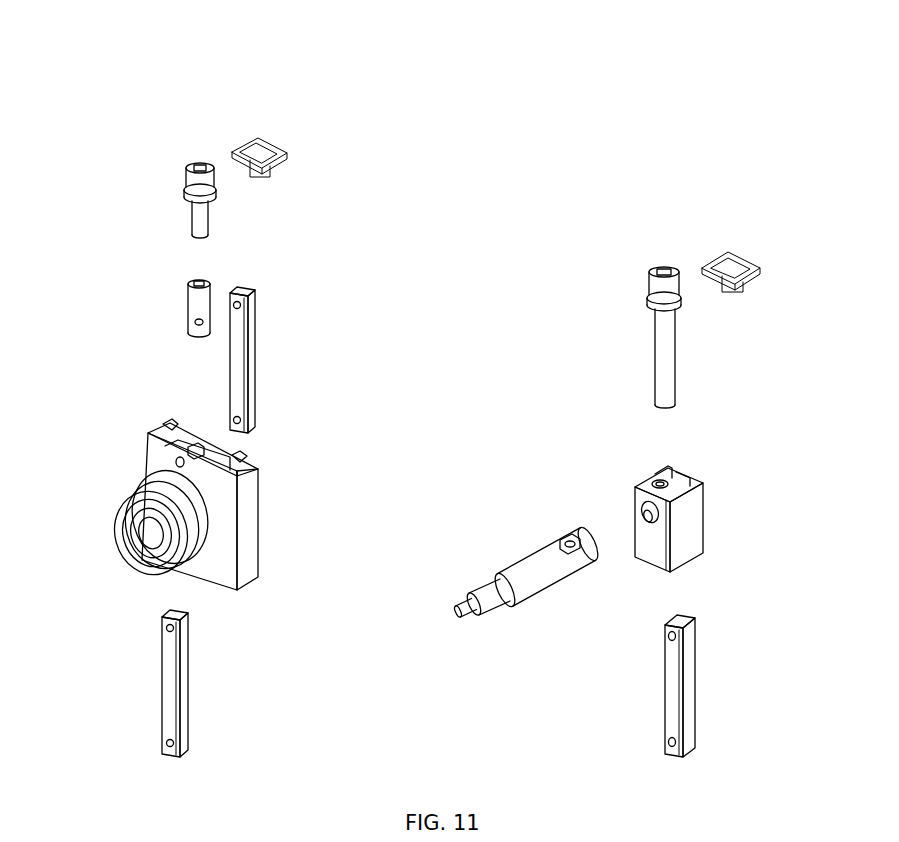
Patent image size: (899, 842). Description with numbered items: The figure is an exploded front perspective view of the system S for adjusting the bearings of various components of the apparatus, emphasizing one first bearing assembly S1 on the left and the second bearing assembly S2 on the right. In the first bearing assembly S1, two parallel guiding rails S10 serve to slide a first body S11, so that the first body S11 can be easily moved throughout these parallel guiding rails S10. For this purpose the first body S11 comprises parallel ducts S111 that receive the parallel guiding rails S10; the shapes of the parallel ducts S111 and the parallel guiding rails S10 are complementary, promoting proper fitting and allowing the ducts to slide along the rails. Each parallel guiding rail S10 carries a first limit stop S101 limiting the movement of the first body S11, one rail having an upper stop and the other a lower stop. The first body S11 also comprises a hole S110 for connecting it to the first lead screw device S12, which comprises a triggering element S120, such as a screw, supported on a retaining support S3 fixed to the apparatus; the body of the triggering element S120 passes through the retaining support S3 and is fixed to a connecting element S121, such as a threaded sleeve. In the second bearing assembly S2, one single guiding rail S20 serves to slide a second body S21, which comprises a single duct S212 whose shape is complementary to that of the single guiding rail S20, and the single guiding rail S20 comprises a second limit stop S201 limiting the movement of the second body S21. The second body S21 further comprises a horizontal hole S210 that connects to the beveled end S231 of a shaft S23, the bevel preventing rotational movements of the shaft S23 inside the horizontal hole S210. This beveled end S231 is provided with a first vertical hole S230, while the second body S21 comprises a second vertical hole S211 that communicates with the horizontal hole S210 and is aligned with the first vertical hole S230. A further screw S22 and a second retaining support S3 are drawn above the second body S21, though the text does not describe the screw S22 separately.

The system S is at (132, 77).
The first bearing assembly S1 is at (303, 183).
The second bearing assembly S2 is at (587, 207).
The retaining support S3 is at (277, 130).
The parallel guiding rails S10 is at (275, 370).
The first limit stop S101 is at (243, 293).
The first body S11 is at (267, 528).
The hole S110 is at (187, 445).
The parallel ducts S111 is at (170, 417).
The first lead screw device S12 is at (113, 223).
The triggering element S120 is at (185, 188).
The connecting element S121 is at (182, 300).
The single guiding rail S20 is at (712, 700).
The second limit stop S201 is at (685, 760).
The second body S21 is at (690, 567).
The horizontal hole S210 is at (645, 518).
The second vertical hole S211 is at (657, 480).
The single duct S212 is at (690, 468).
The screw S22 is at (677, 258).
The shaft S23 is at (525, 547).
The first vertical hole S230 is at (568, 538).
The beveled end S231 is at (555, 535).